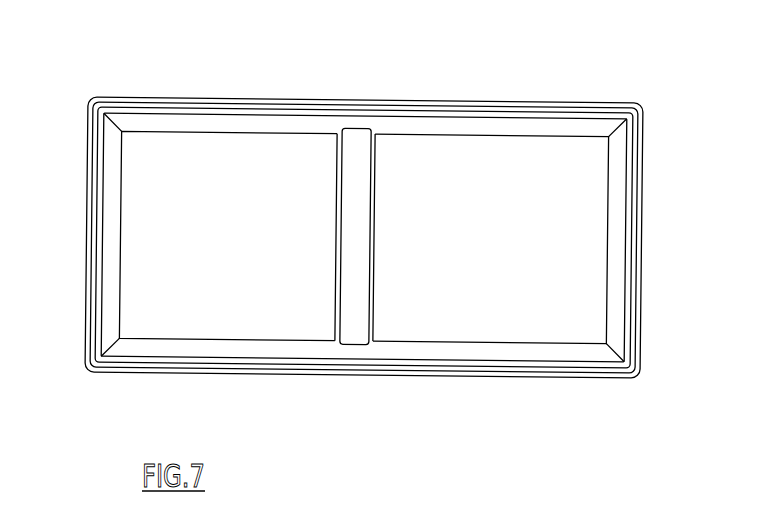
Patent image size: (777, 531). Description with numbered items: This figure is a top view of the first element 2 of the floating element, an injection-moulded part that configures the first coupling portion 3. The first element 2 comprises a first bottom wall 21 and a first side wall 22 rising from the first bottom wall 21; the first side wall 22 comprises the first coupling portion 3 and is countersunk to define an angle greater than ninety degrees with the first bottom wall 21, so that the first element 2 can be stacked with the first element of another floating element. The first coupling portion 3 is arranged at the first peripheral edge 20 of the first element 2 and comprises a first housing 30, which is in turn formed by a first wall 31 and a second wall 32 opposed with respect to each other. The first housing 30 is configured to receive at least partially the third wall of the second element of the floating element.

The first element 2 is at (598, 77).
The first coupling portion 3 is at (646, 238).
The first peripheral edge 20 is at (87, 149).
The first bottom wall 21 is at (218, 168).
The first side wall 22 is at (442, 128).
The first housing 30 is at (303, 373).
The first wall 31 is at (490, 376).
The second wall 32 is at (438, 377).